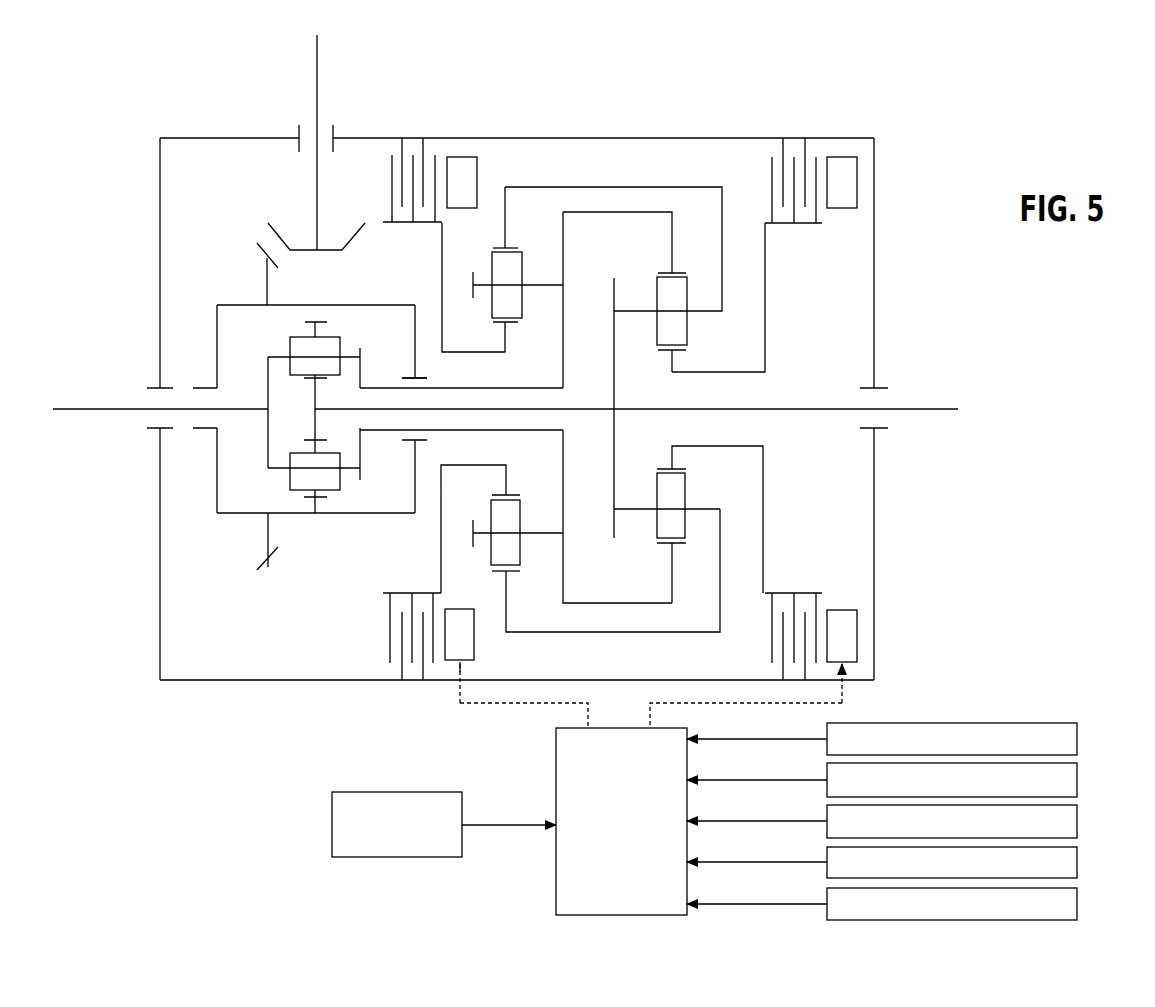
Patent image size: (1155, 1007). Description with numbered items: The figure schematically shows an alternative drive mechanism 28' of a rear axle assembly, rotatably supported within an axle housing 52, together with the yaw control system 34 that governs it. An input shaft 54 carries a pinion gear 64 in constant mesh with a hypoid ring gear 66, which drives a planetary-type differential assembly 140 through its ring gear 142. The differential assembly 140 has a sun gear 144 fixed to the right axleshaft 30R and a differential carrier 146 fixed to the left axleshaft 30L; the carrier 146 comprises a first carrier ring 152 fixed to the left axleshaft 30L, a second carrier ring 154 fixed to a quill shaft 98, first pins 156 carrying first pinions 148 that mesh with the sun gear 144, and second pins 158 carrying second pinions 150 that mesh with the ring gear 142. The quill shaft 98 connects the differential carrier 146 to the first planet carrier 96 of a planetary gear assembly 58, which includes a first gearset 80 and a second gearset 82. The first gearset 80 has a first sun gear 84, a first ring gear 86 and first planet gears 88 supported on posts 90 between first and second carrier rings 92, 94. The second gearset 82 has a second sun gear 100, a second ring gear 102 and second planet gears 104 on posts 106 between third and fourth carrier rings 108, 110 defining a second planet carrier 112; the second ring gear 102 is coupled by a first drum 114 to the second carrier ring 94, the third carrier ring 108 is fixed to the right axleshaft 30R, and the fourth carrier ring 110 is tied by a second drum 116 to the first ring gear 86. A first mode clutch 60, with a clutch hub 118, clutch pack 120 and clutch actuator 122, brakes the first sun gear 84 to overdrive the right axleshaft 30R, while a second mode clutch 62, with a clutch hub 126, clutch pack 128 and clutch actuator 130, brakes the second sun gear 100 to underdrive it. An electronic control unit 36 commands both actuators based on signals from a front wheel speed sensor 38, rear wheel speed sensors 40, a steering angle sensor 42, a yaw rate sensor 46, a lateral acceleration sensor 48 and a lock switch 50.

The drive mechanism 28' is at (510, 369).
The left axleshaft 30L is at (97, 407).
The right axleshaft 30R is at (918, 407).
The yaw control system 34 is at (510, 871).
The electronic control unit 36 is at (568, 752).
The front wheel speed sensor 38 is at (1077, 736).
The rear wheel speed sensor 40 is at (1077, 778).
The steering angle sensor 42 is at (1077, 821).
The yaw rate sensor 46 is at (1077, 862).
The lateral acceleration sensor 48 is at (1077, 903).
The lock switch 50 is at (333, 812).
The axle housing 52 is at (874, 250).
The input shaft 54 is at (317, 86).
The planetary gear assembly 58 is at (628, 166).
The first mode clutch 60 is at (463, 151).
The second mode clutch 62 is at (864, 141).
The pinion gear 64 is at (352, 238).
The hypoid ring gear 66 is at (257, 570).
The first gearset 80 is at (529, 477).
The second gearset 82 is at (648, 538).
The first sun gear 84 is at (505, 335).
The first ring gear 86 is at (505, 213).
The first planet gears 88 is at (500, 267).
The post 90 is at (537, 285).
The first carrier ring 92 is at (473, 298).
The second carrier ring 94 is at (565, 300).
The first planet carrier 96 is at (560, 545).
The quill shaft 98 is at (470, 388).
The second sun gear 100 is at (676, 358).
The second ring gear 102 is at (672, 570).
The second planet gears 104 is at (679, 488).
The post 106 is at (634, 507).
The third carrier ring 108 is at (612, 381).
The fourth carrier ring 110 is at (722, 560).
The second planet carrier 112 is at (612, 511).
The first drum 114 is at (640, 213).
The second drum 116 is at (617, 605).
The clutch hub 118 is at (441, 546).
The clutch pack 120 is at (397, 160).
The clutch actuator 122 is at (477, 172).
The clutch hub 126 is at (765, 280).
The clutch pack 128 is at (797, 175).
The clutch actuator 130 is at (857, 177).
The differential assembly 140 is at (325, 520).
The ring gear 142 is at (318, 318).
The sun gear 144 is at (316, 416).
The differential carrier 146 is at (260, 450).
The first pinions 148 is at (330, 345).
The second pinions 150 is at (335, 483).
The first carrier ring 152 is at (265, 388).
The second carrier ring 154 is at (392, 376).
The first pins 156 is at (285, 349).
The second pins 158 is at (280, 470).